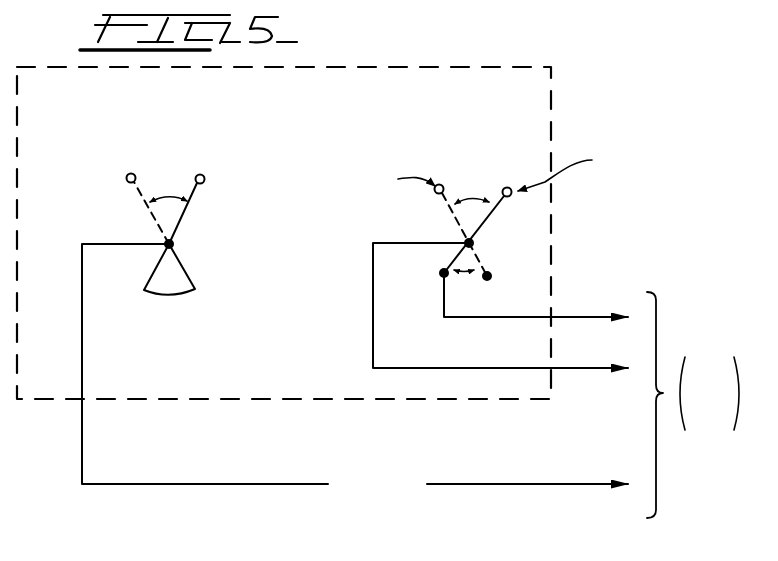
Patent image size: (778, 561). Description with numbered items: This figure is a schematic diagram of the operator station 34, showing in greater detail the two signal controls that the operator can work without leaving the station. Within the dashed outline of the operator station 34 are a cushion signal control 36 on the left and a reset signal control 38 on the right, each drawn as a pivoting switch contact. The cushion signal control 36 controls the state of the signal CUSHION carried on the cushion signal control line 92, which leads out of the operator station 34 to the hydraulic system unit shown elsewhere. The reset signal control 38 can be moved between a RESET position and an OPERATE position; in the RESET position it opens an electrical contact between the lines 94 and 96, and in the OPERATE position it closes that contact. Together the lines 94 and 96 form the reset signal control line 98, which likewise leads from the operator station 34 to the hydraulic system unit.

The operator station 34 is at (437, 62).
The cushion signal control 36 is at (200, 160).
The reset signal control 38 is at (469, 157).
The cushion signal control line 92 is at (182, 484).
The line of reset signal control line 94 is at (578, 317).
The line of reset signal control line 96 is at (577, 368).
The reset signal control line 98 is at (575, 277).